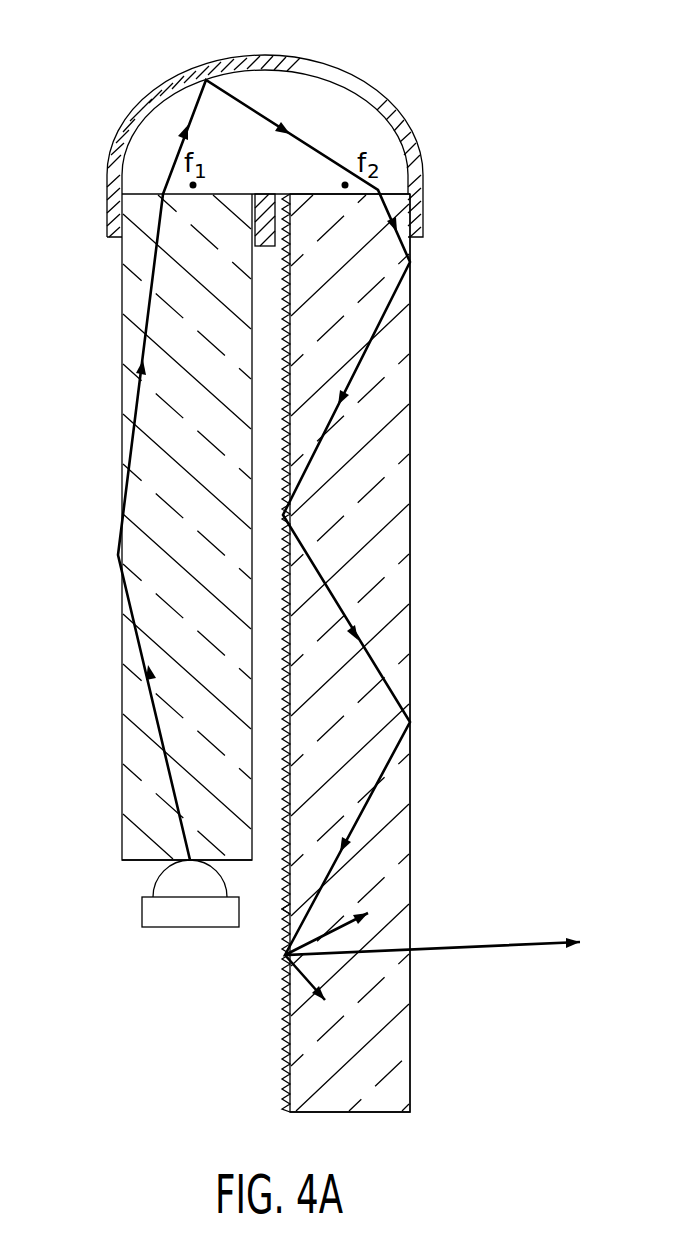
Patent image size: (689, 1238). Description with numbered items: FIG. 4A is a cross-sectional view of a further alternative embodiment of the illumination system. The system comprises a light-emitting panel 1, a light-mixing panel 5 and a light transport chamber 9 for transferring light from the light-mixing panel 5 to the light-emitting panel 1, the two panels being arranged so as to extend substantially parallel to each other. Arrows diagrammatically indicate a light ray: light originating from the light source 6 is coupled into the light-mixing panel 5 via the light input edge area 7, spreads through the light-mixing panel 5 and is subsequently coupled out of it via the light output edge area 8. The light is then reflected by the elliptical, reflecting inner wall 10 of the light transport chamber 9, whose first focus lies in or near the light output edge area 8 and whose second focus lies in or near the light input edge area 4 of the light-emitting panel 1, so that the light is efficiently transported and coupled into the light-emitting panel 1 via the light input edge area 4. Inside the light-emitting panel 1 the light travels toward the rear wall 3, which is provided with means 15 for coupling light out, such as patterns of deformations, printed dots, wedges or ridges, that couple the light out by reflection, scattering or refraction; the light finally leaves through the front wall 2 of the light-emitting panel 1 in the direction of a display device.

The light-emitting panel 1 is at (458, 522).
The front wall 2 is at (413, 1052).
The rear wall 3 is at (283, 1040).
The light input edge area 4 is at (347, 195).
The light-mixing panel 5 is at (85, 425).
The light source 6 is at (165, 916).
The light input edge area 7 is at (133, 859).
The light output edge area 8 is at (160, 195).
The light transport chamber 9 is at (438, 97).
The reflecting inner wall 10 is at (314, 83).
The means for coupling light out 15 is at (287, 758).